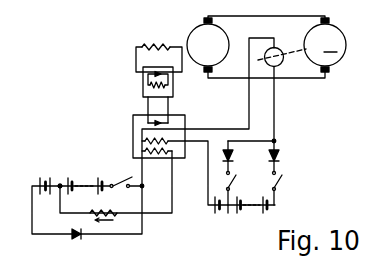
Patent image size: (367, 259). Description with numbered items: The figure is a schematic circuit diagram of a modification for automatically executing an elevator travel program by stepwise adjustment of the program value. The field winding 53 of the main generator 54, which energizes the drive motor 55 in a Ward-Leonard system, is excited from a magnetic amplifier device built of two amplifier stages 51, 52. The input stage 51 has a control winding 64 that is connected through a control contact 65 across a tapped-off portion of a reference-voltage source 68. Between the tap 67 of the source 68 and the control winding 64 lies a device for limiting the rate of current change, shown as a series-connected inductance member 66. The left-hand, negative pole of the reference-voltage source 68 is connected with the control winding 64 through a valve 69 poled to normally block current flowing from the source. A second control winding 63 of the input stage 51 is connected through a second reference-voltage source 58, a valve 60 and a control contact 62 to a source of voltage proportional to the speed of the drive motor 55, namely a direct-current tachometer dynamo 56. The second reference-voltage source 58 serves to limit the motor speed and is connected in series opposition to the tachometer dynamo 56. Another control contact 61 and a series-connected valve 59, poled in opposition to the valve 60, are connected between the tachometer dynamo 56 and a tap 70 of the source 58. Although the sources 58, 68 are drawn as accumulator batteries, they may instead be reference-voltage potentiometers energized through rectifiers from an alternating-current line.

The magnetic amplifier input stage 51 is at (185, 123).
The magnetic amplifier stage 52 is at (143, 85).
The field winding 53 is at (160, 46).
The main generator 54 is at (197, 35).
The drive motor 55 is at (330, 34).
The direct-current tachometer dynamo 56 is at (277, 46).
The second reference-voltage source 58 is at (261, 234).
The valve 59 is at (232, 155).
The valve 60 is at (278, 155).
The control contact 61 is at (238, 177).
The control contact 62 is at (287, 177).
The second control winding 63 is at (144, 139).
The control winding 64 is at (165, 152).
The control contact 65 is at (124, 178).
The inductance member 66 is at (120, 214).
The tap 67 is at (60, 187).
The reference-voltage source 68 is at (73, 166).
The valve 69 is at (80, 237).
The tap 70 is at (228, 208).